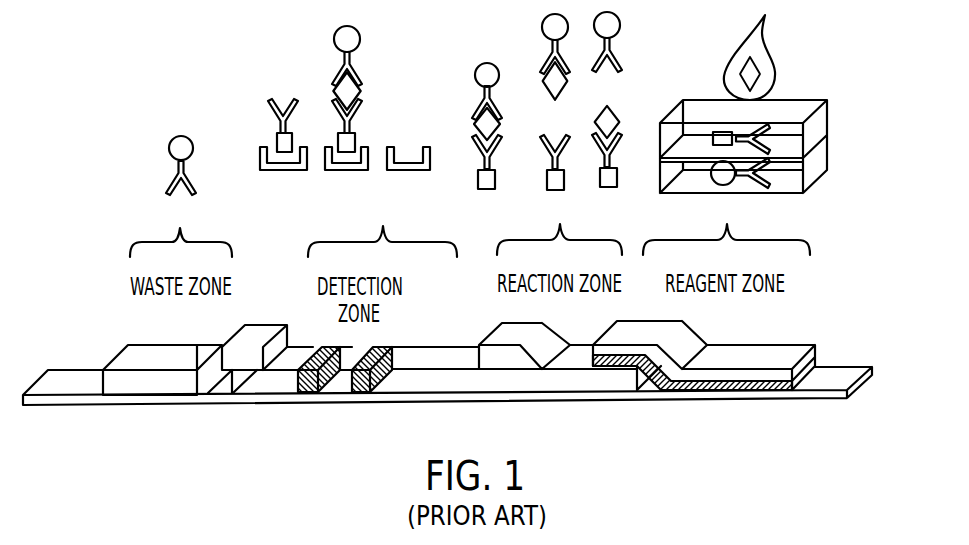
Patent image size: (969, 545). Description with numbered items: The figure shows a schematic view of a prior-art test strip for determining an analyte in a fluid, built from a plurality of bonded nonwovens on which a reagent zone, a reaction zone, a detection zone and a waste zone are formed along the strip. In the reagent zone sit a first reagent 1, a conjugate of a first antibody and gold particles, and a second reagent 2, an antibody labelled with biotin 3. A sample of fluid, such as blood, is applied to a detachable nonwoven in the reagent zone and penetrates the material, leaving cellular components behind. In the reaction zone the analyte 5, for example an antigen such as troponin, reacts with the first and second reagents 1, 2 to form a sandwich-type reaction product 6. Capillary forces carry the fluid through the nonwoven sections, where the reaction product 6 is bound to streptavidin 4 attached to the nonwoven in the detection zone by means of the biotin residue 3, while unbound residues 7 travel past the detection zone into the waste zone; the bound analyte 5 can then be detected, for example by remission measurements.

The first reagent 1 is at (771, 182).
The second reagent 2 is at (771, 143).
The biotin 3 is at (721, 131).
The streptavidin 4 is at (413, 156).
The analyte 5 is at (754, 70).
The reaction product 6 is at (487, 63).
The unbound residues 7 is at (182, 136).